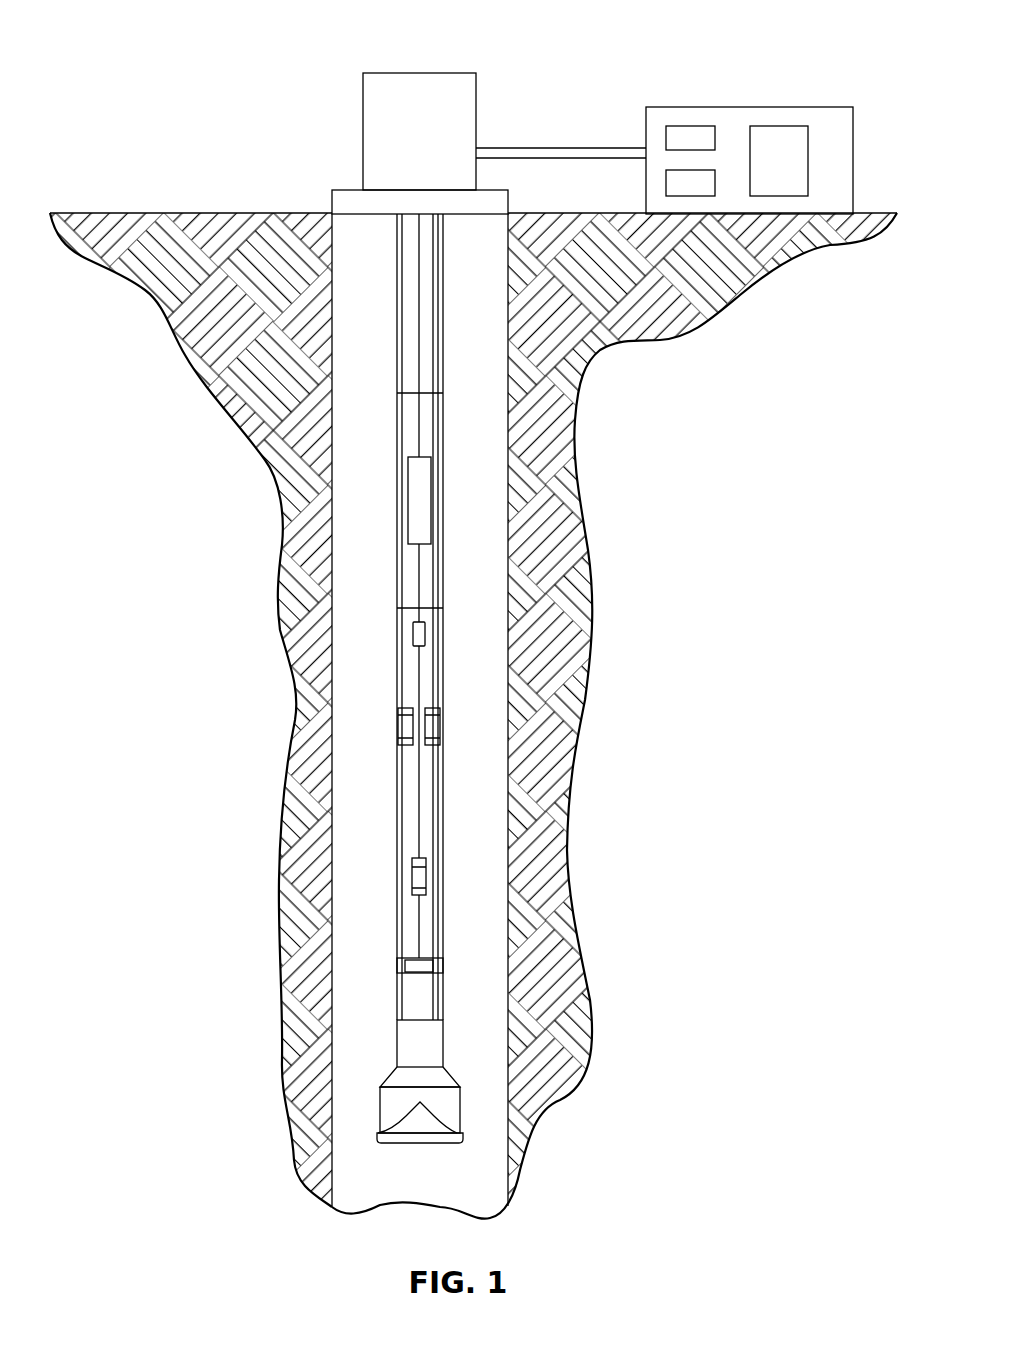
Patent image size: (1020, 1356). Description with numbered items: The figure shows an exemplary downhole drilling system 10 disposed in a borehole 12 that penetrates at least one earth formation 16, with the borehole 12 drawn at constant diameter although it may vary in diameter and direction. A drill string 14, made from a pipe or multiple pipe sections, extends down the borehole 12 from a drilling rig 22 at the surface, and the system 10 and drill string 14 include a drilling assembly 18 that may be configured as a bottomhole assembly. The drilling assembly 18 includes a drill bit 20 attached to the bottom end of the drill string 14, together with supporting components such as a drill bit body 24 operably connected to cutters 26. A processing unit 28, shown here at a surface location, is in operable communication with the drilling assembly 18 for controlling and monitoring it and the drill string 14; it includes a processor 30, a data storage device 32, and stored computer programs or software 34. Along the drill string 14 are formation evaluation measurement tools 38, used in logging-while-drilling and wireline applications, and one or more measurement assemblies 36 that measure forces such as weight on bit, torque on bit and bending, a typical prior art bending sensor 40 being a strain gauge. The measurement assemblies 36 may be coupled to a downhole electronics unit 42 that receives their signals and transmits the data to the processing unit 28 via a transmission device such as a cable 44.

The downhole drilling system 10 is at (118, 43).
The borehole 12 is at (493, 588).
The drill string 14 is at (400, 608).
The earth formation 16 is at (234, 407).
The drilling assembly 18 is at (480, 1053).
The drill bit 20 is at (463, 1106).
The drilling rig 22 is at (414, 96).
The drill bit body 24 is at (413, 1048).
The cutters 26 is at (422, 1124).
The processing unit 28 is at (830, 106).
The processor 30 is at (692, 128).
The data storage device 32 is at (672, 177).
The computer programs or software 34 is at (782, 128).
The measurement assembly 36 is at (465, 722).
The formation evaluation measurement tool 38 is at (425, 634).
The bending sensor 40 is at (408, 710).
The downhole electronics unit 42 is at (422, 470).
The cable 44 is at (422, 418).